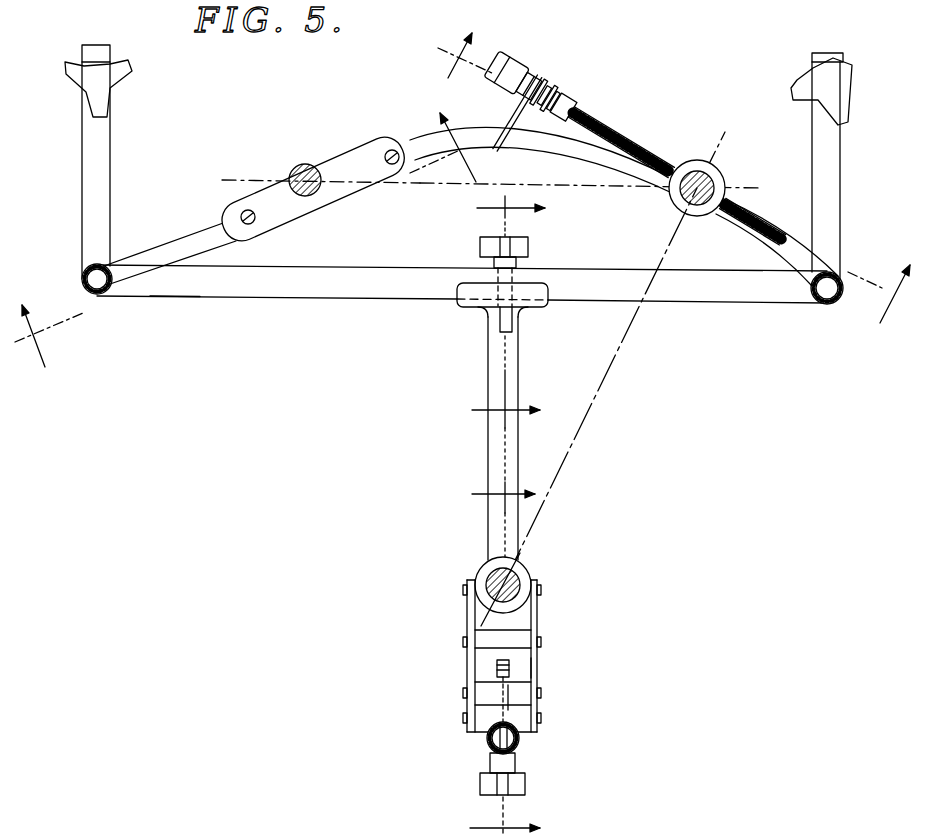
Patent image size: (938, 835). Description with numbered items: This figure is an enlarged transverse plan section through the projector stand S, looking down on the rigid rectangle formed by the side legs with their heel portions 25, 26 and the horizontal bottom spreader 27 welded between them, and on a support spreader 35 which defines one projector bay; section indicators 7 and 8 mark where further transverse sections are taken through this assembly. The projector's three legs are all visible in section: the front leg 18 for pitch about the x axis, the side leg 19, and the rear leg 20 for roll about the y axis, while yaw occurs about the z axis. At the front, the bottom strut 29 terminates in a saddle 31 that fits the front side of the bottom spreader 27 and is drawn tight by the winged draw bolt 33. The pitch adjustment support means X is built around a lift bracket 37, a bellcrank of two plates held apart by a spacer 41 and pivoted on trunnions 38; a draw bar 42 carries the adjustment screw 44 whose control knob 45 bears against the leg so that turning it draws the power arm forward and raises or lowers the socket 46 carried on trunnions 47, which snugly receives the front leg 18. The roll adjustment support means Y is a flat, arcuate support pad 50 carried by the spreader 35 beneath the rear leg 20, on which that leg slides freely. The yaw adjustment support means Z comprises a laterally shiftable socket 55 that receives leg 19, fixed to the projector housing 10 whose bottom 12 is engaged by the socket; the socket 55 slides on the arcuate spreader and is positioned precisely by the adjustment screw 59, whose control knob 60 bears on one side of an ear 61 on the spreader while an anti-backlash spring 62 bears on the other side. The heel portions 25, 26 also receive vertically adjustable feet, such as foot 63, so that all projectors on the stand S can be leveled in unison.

The heel portion 26 is at (96, 152).
The vertically adjustable foot 63 is at (106, 90).
The heel portion 25 is at (826, 192).
The vertically adjustable foot / spring 62 is at (570, 95).
The bottom spreader 27 is at (268, 296).
The stand S is at (186, 290).
The support spreader 35 is at (172, 232).
The support pad 50 is at (356, 142).
The roll adjustment support means Y is at (281, 174).
The rear leg 20 is at (314, 165).
The x axis x is at (580, 188).
The adjustment screw 59 is at (605, 125).
The ear 61 is at (539, 82).
The control knob 60 is at (508, 64).
The yaw adjustment support means Z is at (666, 122).
The socket 55 is at (700, 146).
The side leg 19 is at (715, 180).
The section line 8- 8 is at (660, 190).
The section line 7- 7 is at (245, 246).
The bottom of projector housing 12 is at (475, 310).
The housing 10 is at (472, 654).
The winged draw bolt 33 is at (529, 241).
The saddle 31 is at (458, 306).
The bottom strut 29 is at (498, 357).
The y axis y is at (628, 325).
The socket 46 is at (480, 568).
The front leg 18 is at (513, 575).
The z axis z is at (492, 567).
The lift bracket 37 is at (466, 620).
The trunnions 47 is at (545, 591).
The spacer 41 is at (520, 638).
The adjustment screw 44 is at (492, 665).
The pitch adjustment support means X is at (540, 668).
The draw bar 42 is at (480, 686).
The trunnions 38 is at (545, 719).
The control knob 45 is at (520, 786).